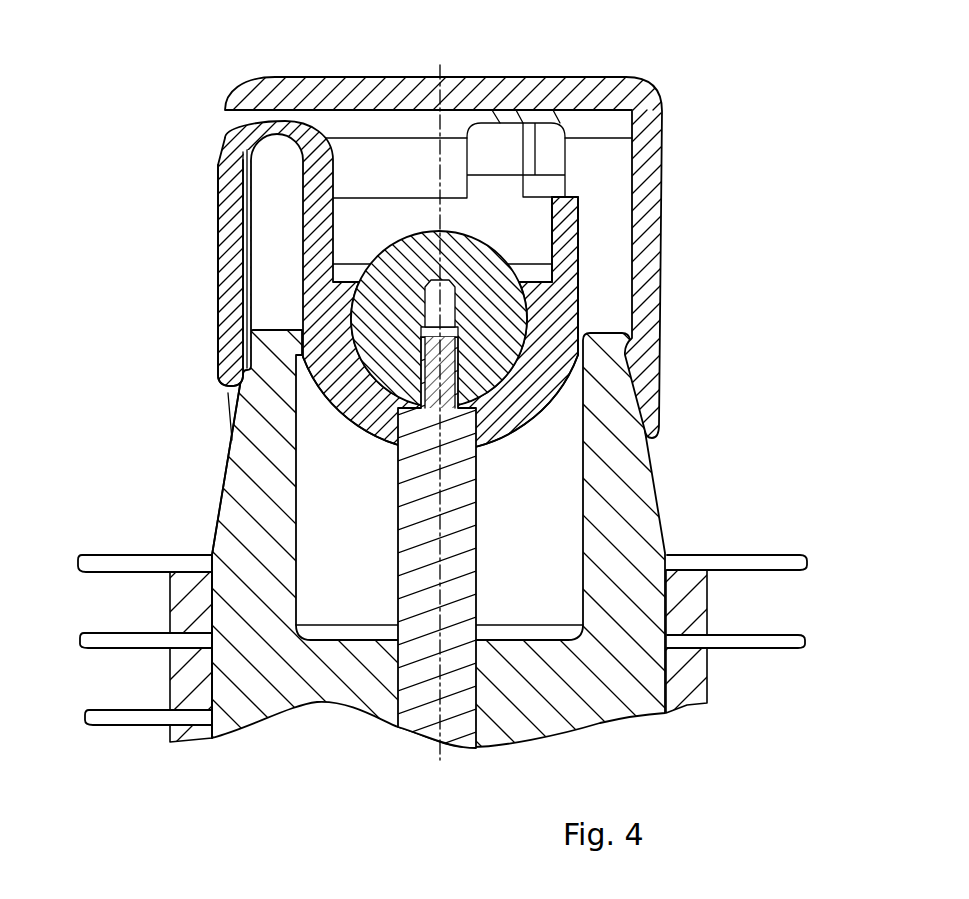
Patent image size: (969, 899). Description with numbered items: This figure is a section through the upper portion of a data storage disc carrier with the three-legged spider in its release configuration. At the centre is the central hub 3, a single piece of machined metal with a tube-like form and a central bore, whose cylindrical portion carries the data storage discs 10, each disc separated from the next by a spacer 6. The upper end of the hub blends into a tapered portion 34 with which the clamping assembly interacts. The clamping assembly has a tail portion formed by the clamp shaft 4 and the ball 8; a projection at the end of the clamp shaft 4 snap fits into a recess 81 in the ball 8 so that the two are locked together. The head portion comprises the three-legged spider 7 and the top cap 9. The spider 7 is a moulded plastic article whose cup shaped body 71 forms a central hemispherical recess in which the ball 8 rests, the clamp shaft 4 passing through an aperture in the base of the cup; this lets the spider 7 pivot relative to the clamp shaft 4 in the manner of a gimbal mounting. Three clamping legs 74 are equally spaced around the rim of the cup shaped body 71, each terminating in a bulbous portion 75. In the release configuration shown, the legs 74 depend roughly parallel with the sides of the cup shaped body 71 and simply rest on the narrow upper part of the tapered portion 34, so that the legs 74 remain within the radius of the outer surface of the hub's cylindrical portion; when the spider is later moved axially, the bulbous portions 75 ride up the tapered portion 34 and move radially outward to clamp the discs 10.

The central hub 3 is at (645, 518).
The clamp shaft 4 is at (417, 682).
The spacer 6 is at (698, 680).
The three-legged spider 7 is at (507, 213).
The ball 8 is at (512, 333).
The top cap 9 is at (647, 112).
The data storage disc 10 is at (817, 690).
The tapered portion 34 is at (242, 455).
The cup shaped body 71 is at (487, 432).
The clamping leg 74 is at (217, 250).
The bulbous portion 75 is at (215, 372).
The recess 81 is at (462, 330).